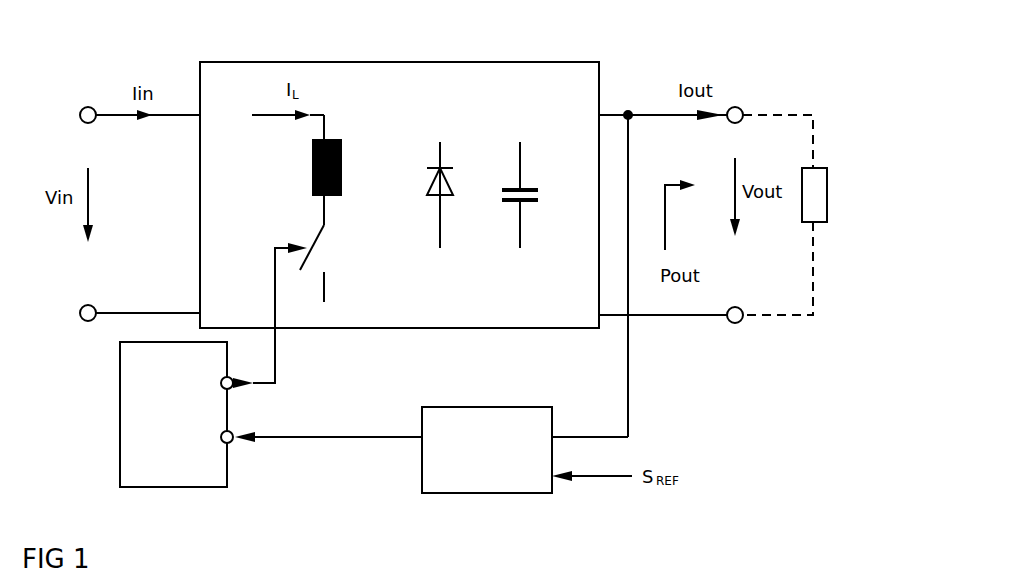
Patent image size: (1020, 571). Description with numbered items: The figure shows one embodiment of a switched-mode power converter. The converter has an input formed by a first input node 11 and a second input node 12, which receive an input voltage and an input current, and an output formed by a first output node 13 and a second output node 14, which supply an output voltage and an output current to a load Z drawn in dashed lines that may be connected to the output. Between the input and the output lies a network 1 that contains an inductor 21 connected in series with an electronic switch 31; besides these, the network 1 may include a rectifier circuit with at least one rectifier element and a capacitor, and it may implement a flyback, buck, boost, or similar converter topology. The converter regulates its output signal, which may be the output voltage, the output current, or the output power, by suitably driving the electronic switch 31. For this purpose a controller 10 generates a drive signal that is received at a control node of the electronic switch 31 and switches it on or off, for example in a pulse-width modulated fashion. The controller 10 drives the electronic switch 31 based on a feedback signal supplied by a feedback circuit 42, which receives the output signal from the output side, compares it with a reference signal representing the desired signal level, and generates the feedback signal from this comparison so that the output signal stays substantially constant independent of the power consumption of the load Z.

The network 1 is at (417, 62).
The controller 10 is at (120, 420).
The first input node 11 is at (82, 108).
The second input node 12 is at (82, 310).
The first output node 13 is at (737, 107).
The second output node 14 is at (735, 323).
The inductor 21 is at (340, 170).
The electronic switch 31 is at (325, 257).
The feedback circuit 42 is at (515, 407).
The load Z is at (828, 197).